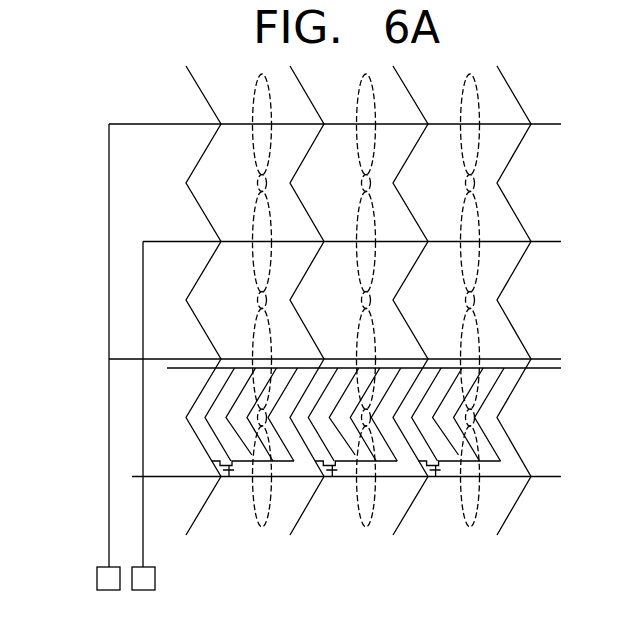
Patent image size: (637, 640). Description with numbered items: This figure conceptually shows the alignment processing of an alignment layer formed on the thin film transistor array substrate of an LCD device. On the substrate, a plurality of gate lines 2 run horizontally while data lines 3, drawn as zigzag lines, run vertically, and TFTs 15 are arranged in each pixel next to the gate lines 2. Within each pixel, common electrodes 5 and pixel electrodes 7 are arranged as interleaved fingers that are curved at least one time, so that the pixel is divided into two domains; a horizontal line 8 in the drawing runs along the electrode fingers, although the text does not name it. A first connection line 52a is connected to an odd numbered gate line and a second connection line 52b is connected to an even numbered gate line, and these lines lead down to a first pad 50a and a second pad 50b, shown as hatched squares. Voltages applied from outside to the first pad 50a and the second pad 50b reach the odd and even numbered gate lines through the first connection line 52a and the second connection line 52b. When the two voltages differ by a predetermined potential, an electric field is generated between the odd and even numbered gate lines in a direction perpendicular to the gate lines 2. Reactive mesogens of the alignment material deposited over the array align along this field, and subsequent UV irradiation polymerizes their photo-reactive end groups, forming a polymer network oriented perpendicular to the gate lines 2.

The gate line 2 is at (365, 513).
The data line 3 is at (202, 508).
The common electrode 5 is at (469, 392).
The pixel electrode 7 is at (478, 408).
The common electrode line 8 is at (176, 368).
The thin film transistor 15 is at (233, 469).
The first pad 50a is at (142, 590).
The second pad 50b is at (105, 590).
The first connection line 52a is at (146, 558).
The second connection line 52b is at (107, 557).